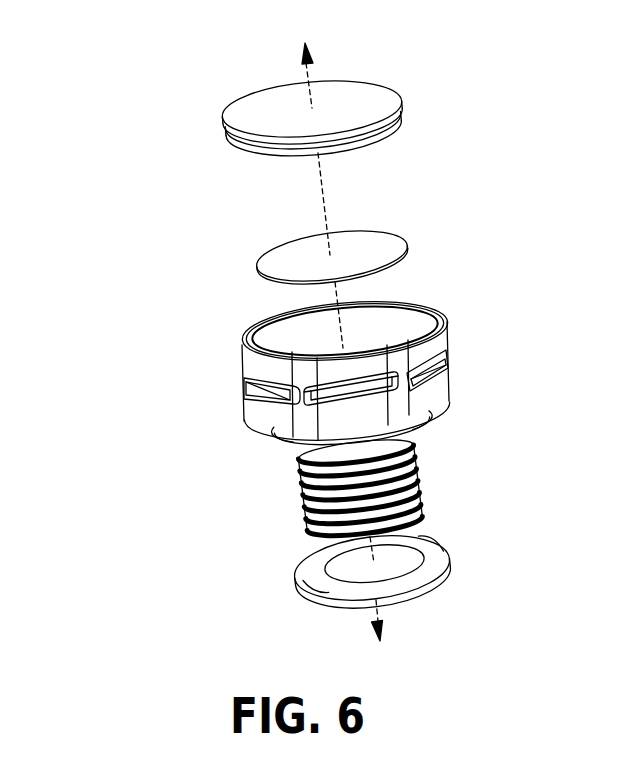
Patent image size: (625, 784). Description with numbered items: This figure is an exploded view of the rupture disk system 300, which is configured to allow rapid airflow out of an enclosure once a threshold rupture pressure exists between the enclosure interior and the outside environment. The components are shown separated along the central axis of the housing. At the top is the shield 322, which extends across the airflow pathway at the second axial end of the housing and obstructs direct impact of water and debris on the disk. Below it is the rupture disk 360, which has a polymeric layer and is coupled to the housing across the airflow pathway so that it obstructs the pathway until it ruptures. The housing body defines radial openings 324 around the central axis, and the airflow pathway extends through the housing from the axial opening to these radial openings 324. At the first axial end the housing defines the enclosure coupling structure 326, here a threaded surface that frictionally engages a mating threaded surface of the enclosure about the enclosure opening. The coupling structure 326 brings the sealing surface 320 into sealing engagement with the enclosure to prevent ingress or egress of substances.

The rupture disk system 300 is at (157, 112).
The sealing surface 320 is at (442, 553).
The shield 322 is at (369, 103).
The radial openings 324 is at (437, 362).
The enclosure coupling structure 326 is at (295, 455).
The rupture disk 360 is at (277, 260).